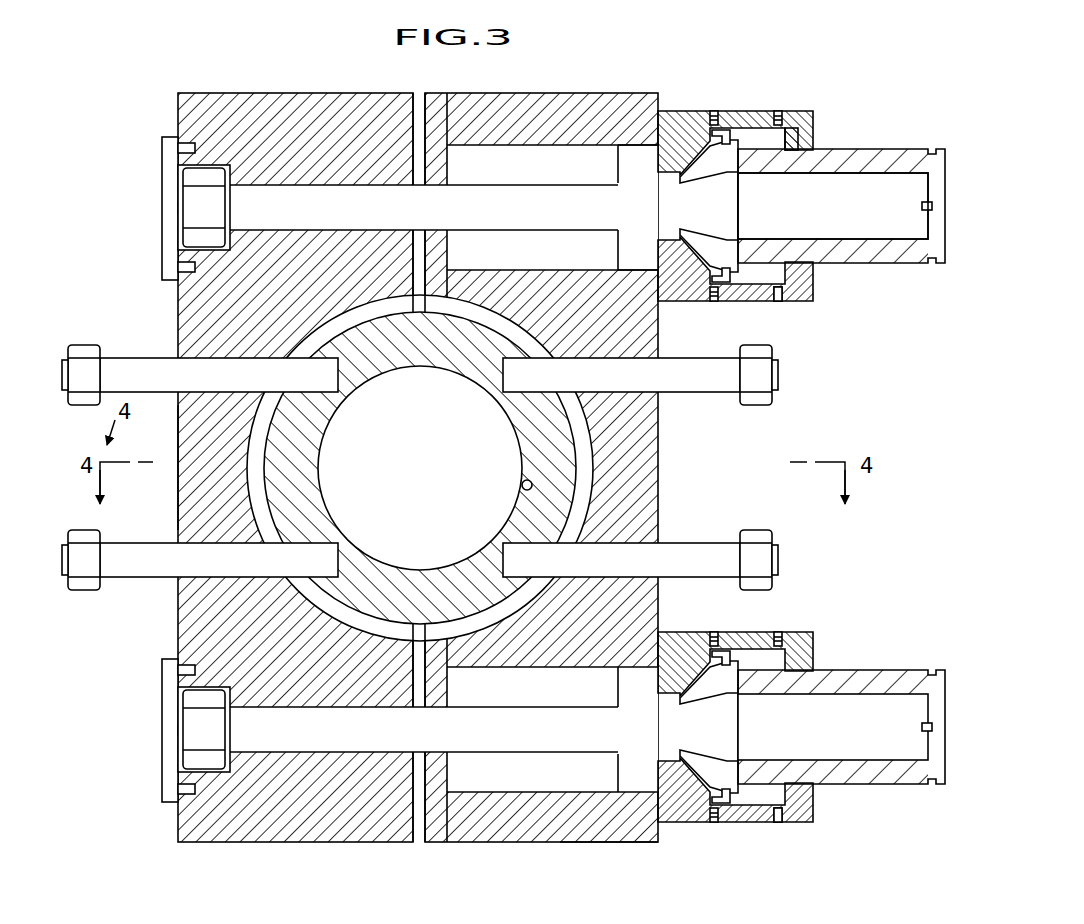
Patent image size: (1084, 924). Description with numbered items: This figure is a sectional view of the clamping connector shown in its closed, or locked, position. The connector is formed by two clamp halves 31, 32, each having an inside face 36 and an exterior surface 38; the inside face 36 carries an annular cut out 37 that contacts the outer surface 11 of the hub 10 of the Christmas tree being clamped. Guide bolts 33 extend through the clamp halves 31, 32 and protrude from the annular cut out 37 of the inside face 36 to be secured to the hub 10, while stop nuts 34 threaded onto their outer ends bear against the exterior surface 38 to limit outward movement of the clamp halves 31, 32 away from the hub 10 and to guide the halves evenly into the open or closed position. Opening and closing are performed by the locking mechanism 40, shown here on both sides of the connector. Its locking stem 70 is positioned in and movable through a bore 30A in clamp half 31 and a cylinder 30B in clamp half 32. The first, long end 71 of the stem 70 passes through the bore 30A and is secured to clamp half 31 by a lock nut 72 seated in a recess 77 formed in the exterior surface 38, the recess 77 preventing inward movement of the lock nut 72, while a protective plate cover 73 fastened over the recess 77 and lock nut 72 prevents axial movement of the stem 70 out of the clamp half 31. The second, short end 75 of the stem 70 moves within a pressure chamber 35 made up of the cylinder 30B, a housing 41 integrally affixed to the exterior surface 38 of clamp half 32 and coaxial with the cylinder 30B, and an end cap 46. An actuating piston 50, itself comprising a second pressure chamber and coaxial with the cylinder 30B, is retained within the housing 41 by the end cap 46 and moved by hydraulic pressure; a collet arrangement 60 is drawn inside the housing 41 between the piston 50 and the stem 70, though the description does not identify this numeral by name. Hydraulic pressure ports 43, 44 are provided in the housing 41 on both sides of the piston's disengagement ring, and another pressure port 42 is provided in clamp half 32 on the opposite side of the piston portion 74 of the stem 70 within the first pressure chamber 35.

The hub 10 is at (545, 441).
The outer surface 11 is at (522, 487).
The bore 30A is at (370, 731).
The cylinder 30B is at (499, 260).
The clamp half 31 is at (282, 292).
The clamp half 32 is at (612, 322).
The guide bolt 33 is at (133, 358).
The stop nut 34 is at (82, 345).
The pressure chamber 35 is at (765, 805).
The inside face 36 is at (418, 92).
The annular cut out 37 is at (248, 450).
The exterior surface 38 is at (178, 460).
The locking mechanism 40 is at (801, 426).
The housing 41 is at (735, 171).
The pressure port 42 is at (447, 104).
The hydraulic pressure port 43 is at (709, 246).
The hydraulic pressure port 44 is at (795, 323).
The end cap 46 is at (811, 109).
The actuating piston 50 is at (841, 181).
The seal 60 is at (727, 175).
The locking stem 70 is at (330, 753).
The long end 71 is at (330, 217).
The lock nut 72 is at (207, 178).
The protective plate cover 73 is at (165, 162).
The piston portion 74 is at (655, 212).
The short end 75 is at (833, 206).
The recess 77 is at (225, 194).